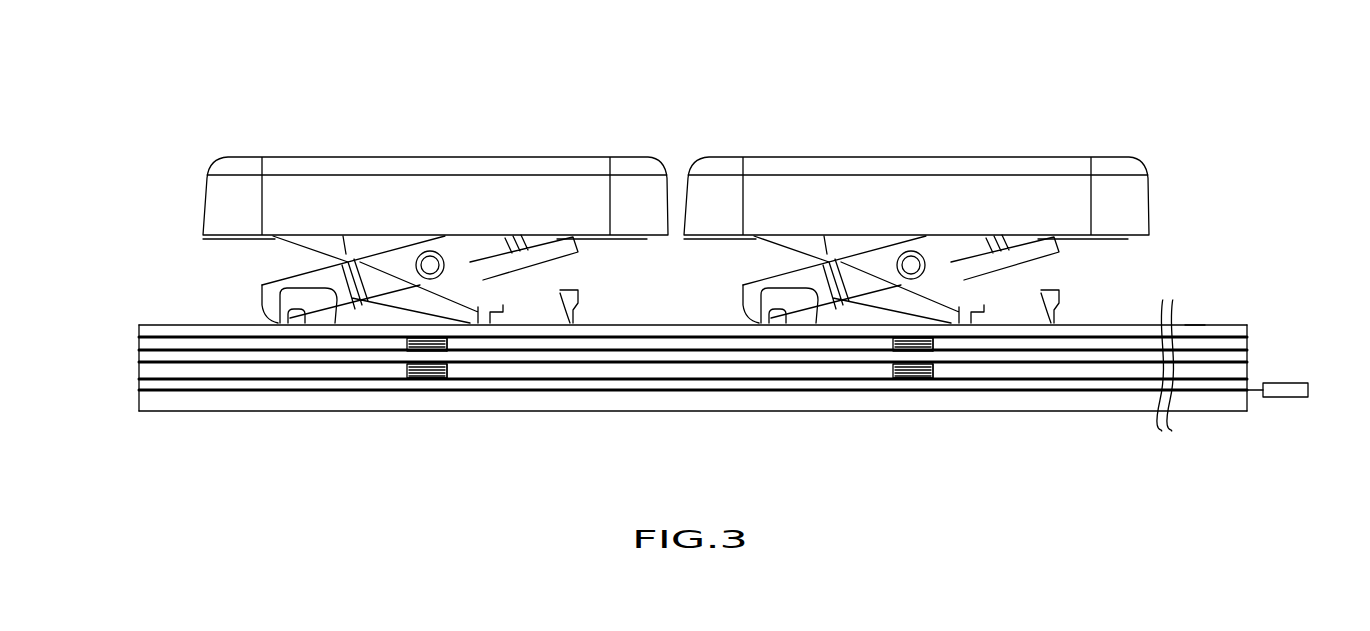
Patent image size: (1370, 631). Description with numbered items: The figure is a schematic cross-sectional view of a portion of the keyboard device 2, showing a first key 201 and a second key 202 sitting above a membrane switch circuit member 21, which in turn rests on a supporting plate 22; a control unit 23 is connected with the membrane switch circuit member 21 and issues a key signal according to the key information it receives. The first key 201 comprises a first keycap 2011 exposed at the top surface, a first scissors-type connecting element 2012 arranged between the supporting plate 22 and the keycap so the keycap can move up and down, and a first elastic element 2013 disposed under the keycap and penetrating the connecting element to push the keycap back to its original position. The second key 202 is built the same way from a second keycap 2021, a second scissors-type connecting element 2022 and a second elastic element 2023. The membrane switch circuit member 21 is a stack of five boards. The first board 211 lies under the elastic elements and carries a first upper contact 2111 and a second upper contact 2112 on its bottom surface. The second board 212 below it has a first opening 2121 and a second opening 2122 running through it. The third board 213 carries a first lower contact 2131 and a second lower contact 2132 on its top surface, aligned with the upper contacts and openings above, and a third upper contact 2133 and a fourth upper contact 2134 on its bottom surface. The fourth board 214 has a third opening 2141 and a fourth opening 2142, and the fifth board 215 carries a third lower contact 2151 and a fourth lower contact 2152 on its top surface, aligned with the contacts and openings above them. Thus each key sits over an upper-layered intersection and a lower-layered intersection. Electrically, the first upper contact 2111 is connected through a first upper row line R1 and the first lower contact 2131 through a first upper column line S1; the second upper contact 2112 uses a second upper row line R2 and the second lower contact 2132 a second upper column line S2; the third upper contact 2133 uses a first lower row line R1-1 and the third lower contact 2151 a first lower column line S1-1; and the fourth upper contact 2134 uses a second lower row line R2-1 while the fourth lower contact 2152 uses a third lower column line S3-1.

The keyboard device 2 is at (1213, 78).
The membrane switch circuit member 21 is at (70, 268).
The first board 211 is at (163, 330).
The second board 212 is at (156, 345).
The third board 213 is at (152, 356).
The fourth board 214 is at (160, 372).
The fifth board 215 is at (182, 385).
The supporting plate 22 is at (1187, 400).
The control unit 23 is at (1290, 384).
The first key 201 is at (373, 112).
The first keycap 2011 is at (528, 165).
The first scissors-type connecting element 2012 is at (466, 256).
The first elastic element 2013 is at (348, 258).
The first upper contact 2111 is at (402, 250).
The second key 202 is at (854, 112).
The second keycap 2021 is at (916, 178).
The second scissors-type connecting element 2022 is at (901, 220).
The second elastic element 2023 is at (869, 220).
The second upper contact 2112 is at (915, 234).
The first upper row line R1 is at (310, 280).
The first lower row line R1-1 is at (290, 322).
The second upper row line R2 is at (1195, 330).
The second lower row line R2-1 is at (1235, 350).
The first opening 2121 is at (407, 345).
The second opening 2122 is at (893, 345).
The first lower contact 2131 is at (450, 347).
The second lower contact 2132 is at (933, 350).
The third upper contact 2133 is at (448, 372).
The fourth upper contact 2134 is at (933, 368).
The third opening 2141 is at (408, 372).
The fourth opening 2142 is at (893, 372).
The third lower contact 2151 is at (440, 379).
The fourth lower contact 2152 is at (926, 378).
The first upper column line S1 is at (262, 350).
The first lower column line S1-1 is at (305, 352).
The second upper column line S2 is at (1088, 362).
The third lower column line S3-1 is at (1228, 381).